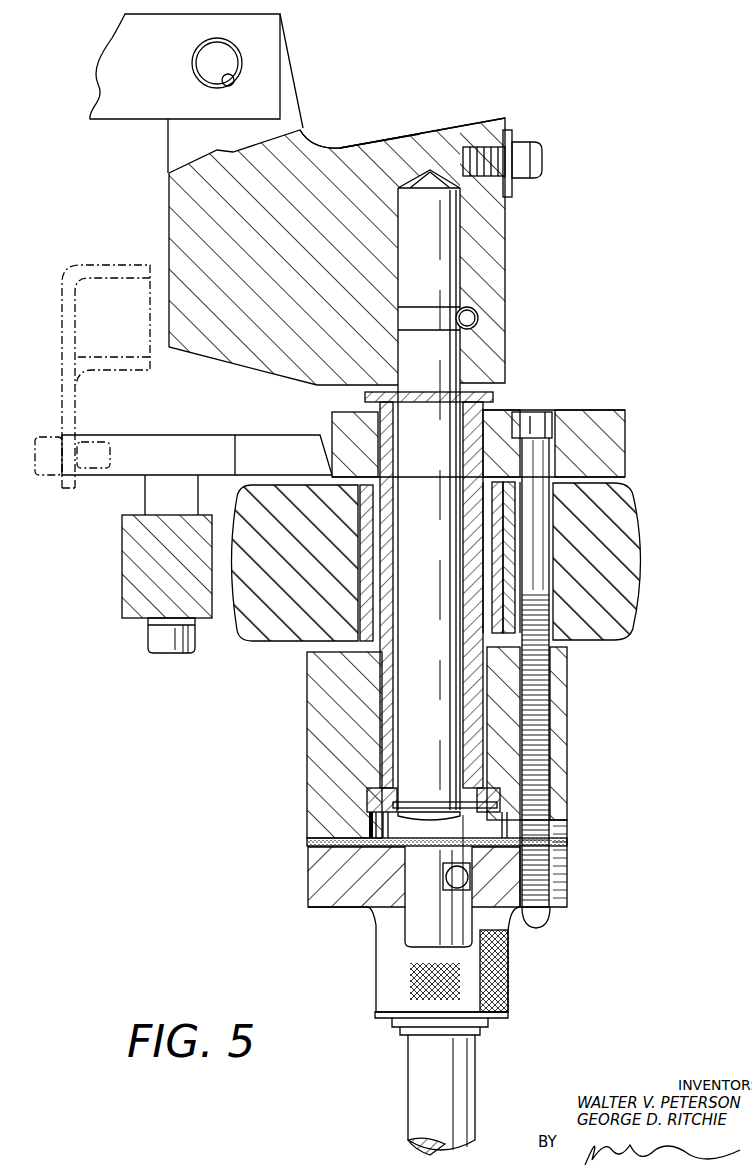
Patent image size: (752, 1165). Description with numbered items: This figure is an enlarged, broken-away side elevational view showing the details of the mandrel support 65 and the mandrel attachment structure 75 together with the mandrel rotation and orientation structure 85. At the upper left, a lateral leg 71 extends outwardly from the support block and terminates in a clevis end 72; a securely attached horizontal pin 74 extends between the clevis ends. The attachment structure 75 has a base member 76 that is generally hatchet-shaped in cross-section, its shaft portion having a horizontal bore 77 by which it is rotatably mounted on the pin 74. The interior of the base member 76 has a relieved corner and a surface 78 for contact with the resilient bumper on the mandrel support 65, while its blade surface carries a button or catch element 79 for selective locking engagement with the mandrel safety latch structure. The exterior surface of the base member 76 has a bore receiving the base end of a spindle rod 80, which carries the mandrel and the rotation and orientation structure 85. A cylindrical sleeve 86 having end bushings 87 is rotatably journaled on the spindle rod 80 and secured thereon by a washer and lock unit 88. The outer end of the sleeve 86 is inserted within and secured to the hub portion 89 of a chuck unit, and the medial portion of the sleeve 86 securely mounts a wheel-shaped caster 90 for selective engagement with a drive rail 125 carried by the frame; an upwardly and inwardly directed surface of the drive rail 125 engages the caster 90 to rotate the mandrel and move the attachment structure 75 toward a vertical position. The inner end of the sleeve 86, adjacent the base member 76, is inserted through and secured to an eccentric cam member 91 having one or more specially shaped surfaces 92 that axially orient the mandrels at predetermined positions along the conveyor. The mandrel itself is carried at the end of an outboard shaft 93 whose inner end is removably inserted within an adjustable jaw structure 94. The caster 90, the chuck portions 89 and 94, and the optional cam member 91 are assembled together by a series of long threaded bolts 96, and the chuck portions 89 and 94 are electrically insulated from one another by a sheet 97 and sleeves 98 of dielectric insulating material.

The mandrel support 65 is at (134, 125).
The lateral leg 71 is at (137, 35).
The clevis end 72 is at (273, 28).
The horizontal pin 74 is at (237, 62).
The mandrel attachment structure 75 is at (364, 145).
The base member 76 is at (500, 233).
The horizontal bore 77 is at (226, 87).
The surface 78 is at (424, 132).
The button or catch element 79 is at (544, 160).
The spindle rod 80 is at (452, 270).
The mandrel rotation and orientation structure 85 is at (662, 542).
The cylindrical sleeve 86 is at (388, 664).
The end bushings 87 is at (488, 402).
The washer and lock unit 88 is at (392, 805).
The hub portion 89 is at (332, 738).
The caster 90 is at (636, 600).
The eccentric cam member 91 is at (600, 432).
The surfaces 92 is at (625, 447).
The outboard shaft or rod 93 is at (470, 1093).
The adjustable jaw structure 94 is at (390, 957).
The long threaded bolts 96 is at (543, 516).
The sheet 97 is at (308, 843).
The sleeves 98 is at (562, 858).
The drive rail 125 is at (140, 568).